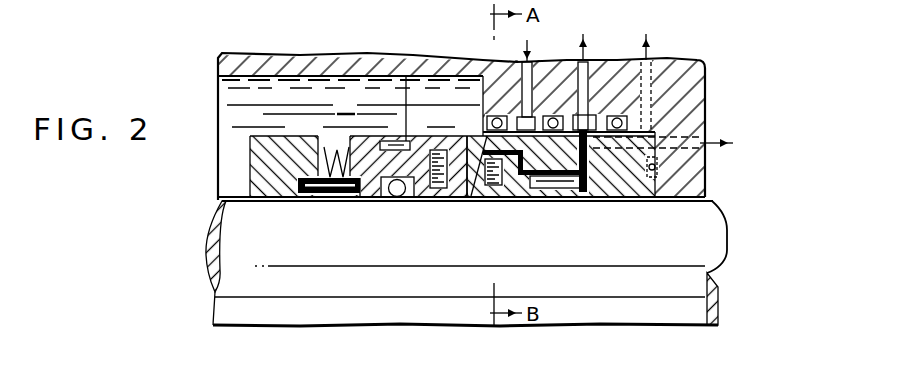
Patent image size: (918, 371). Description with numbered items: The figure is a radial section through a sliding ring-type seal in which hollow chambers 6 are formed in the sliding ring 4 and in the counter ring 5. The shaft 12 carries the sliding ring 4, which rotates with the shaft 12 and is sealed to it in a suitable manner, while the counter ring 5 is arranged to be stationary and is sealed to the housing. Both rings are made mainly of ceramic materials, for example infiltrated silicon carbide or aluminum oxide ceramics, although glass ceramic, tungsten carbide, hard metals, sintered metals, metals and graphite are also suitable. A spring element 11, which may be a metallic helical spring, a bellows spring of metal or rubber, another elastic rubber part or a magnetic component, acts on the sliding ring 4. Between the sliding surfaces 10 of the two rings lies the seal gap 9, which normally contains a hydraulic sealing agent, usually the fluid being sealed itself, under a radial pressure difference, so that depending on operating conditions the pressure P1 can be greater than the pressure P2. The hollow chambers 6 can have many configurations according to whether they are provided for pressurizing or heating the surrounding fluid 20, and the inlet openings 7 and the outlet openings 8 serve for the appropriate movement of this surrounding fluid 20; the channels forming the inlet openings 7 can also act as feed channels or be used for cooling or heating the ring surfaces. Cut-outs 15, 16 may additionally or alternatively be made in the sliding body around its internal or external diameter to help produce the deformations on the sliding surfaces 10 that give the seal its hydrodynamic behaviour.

The surrounding fluid 20 is at (305, 97).
The cut-outs 16 is at (406, 76).
The sealing medium pressure P1 is at (346, 104).
The shaft 12 is at (233, 241).
The spring element 11 is at (326, 198).
The sliding ring 4 is at (378, 199).
The cut-outs 15 is at (387, 201).
The hollow chambers 6 is at (435, 200).
The sliding surfaces 10 is at (467, 200).
The seal gap 9 is at (473, 200).
The inlet openings 7 is at (522, 197).
The outlet openings 8 is at (570, 196).
The counter ring 5 is at (612, 198).
The sealing medium pressure P2 is at (668, 199).